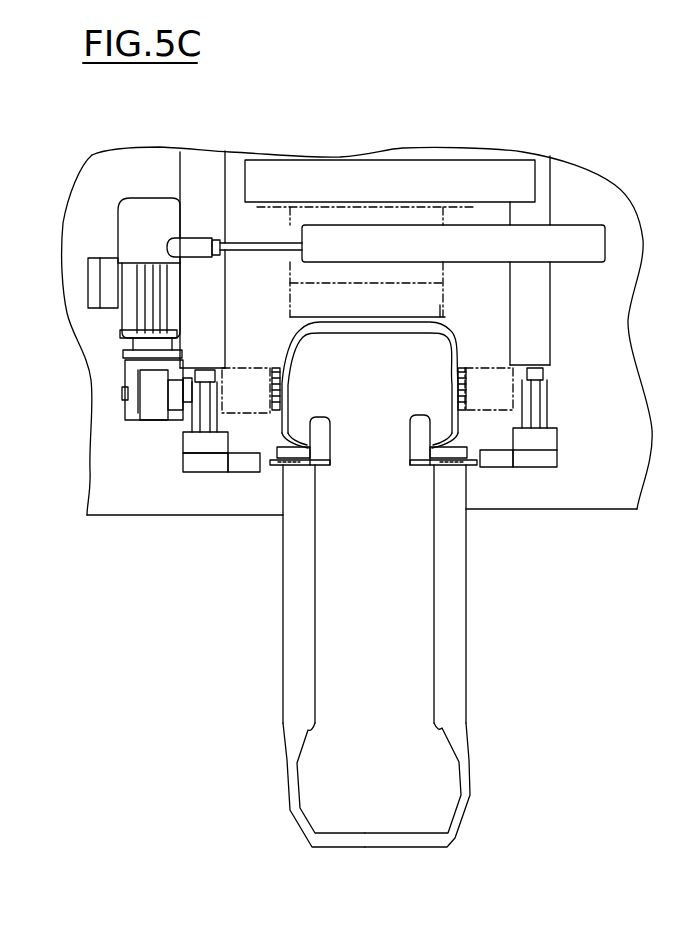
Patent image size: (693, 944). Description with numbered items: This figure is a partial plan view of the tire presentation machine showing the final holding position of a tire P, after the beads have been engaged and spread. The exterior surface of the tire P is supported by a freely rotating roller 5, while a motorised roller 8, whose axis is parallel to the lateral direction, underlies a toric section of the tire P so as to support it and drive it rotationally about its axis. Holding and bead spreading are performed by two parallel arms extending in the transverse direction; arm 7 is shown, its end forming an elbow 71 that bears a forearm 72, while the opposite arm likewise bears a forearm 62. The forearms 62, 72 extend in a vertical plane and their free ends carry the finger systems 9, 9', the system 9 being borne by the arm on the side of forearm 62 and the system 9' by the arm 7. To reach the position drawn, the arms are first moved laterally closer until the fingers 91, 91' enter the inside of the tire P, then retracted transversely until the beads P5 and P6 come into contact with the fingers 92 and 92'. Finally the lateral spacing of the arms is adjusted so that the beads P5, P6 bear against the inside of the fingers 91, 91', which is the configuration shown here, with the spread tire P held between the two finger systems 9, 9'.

The roller 5 is at (427, 300).
The motorised roller 8 is at (493, 380).
The arm 7 is at (548, 400).
The elbow 71 is at (533, 467).
The forearm 72 is at (497, 467).
The forearm 62 is at (242, 472).
The finger 92 is at (277, 504).
The finger 91 is at (330, 489).
The finger 91' is at (408, 488).
The finger 92' is at (460, 504).
The finger system 9 is at (262, 512).
The finger system 9' is at (466, 511).
The tire P is at (373, 656).
The bead P5 is at (440, 725).
The bead P6 is at (310, 727).